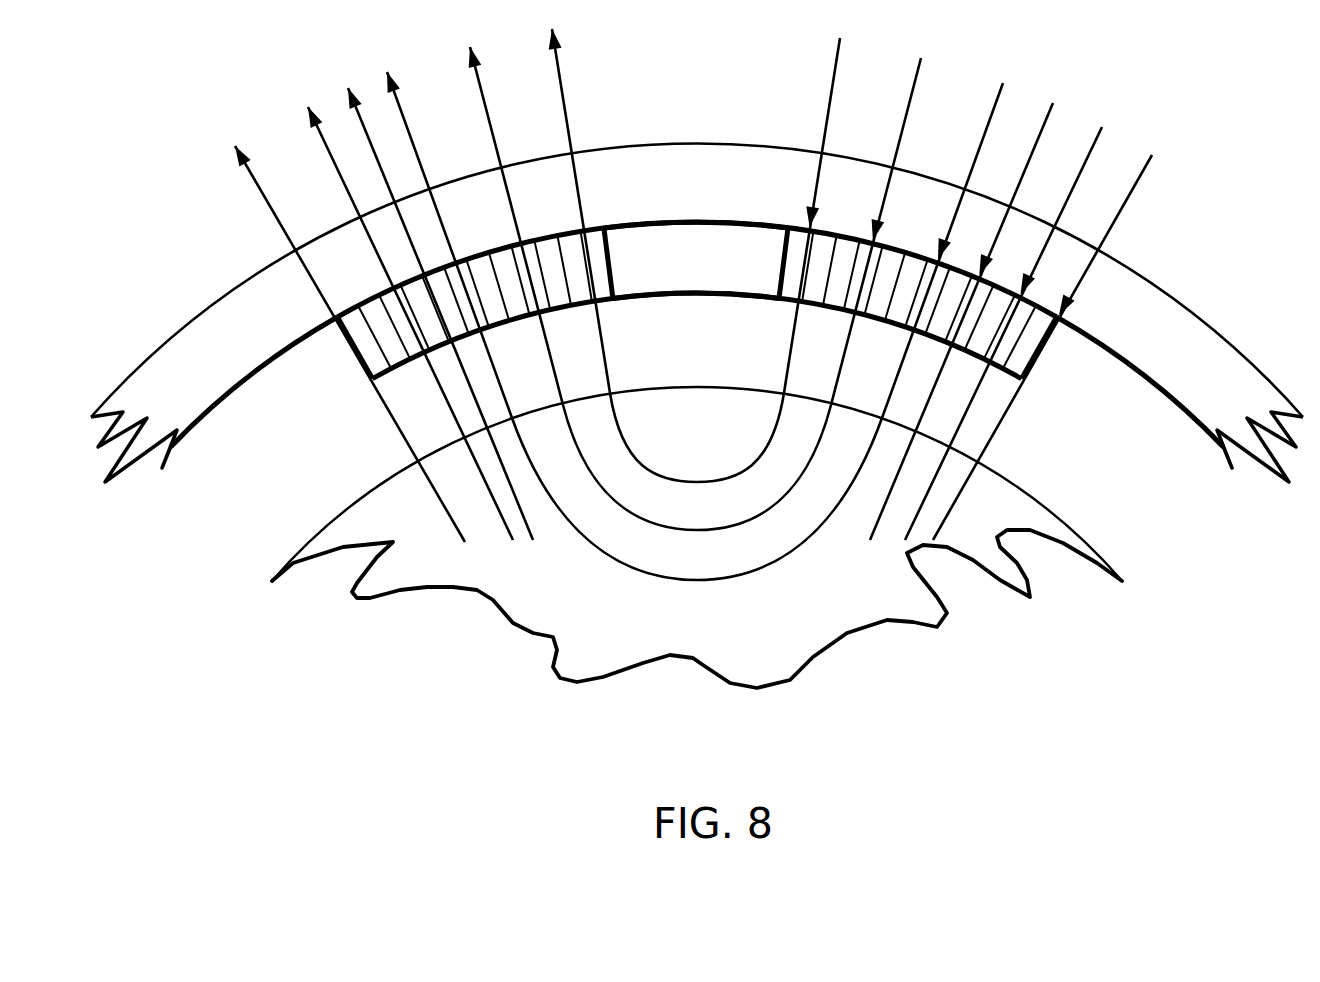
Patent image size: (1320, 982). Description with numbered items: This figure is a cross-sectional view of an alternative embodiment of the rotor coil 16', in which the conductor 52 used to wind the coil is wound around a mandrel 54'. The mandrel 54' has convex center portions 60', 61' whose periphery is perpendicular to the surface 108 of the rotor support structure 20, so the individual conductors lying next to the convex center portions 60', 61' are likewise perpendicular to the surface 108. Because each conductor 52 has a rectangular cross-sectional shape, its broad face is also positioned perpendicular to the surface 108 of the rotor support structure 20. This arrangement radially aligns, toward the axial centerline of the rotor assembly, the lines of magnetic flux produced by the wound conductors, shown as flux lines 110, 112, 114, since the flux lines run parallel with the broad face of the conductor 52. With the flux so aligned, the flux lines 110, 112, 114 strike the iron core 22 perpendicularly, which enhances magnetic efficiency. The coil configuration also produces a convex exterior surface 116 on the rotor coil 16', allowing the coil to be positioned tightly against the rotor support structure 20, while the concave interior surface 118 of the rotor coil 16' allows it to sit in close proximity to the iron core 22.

The rotor coil 16' is at (731, 319).
The rotor support structure 20 is at (1240, 362).
The iron core 22 is at (1078, 540).
The conductor 52 is at (367, 353).
The mandrel 54' is at (696, 200).
The convex center portion 60' is at (650, 282).
The convex center portion 61' is at (744, 293).
The surface 108 is at (1167, 400).
The flux line 110 is at (833, 73).
The flux line 112 is at (913, 88).
The flux line 114 is at (997, 103).
The convex exterior surface 116 is at (630, 222).
The concave interior surface 118 is at (887, 335).